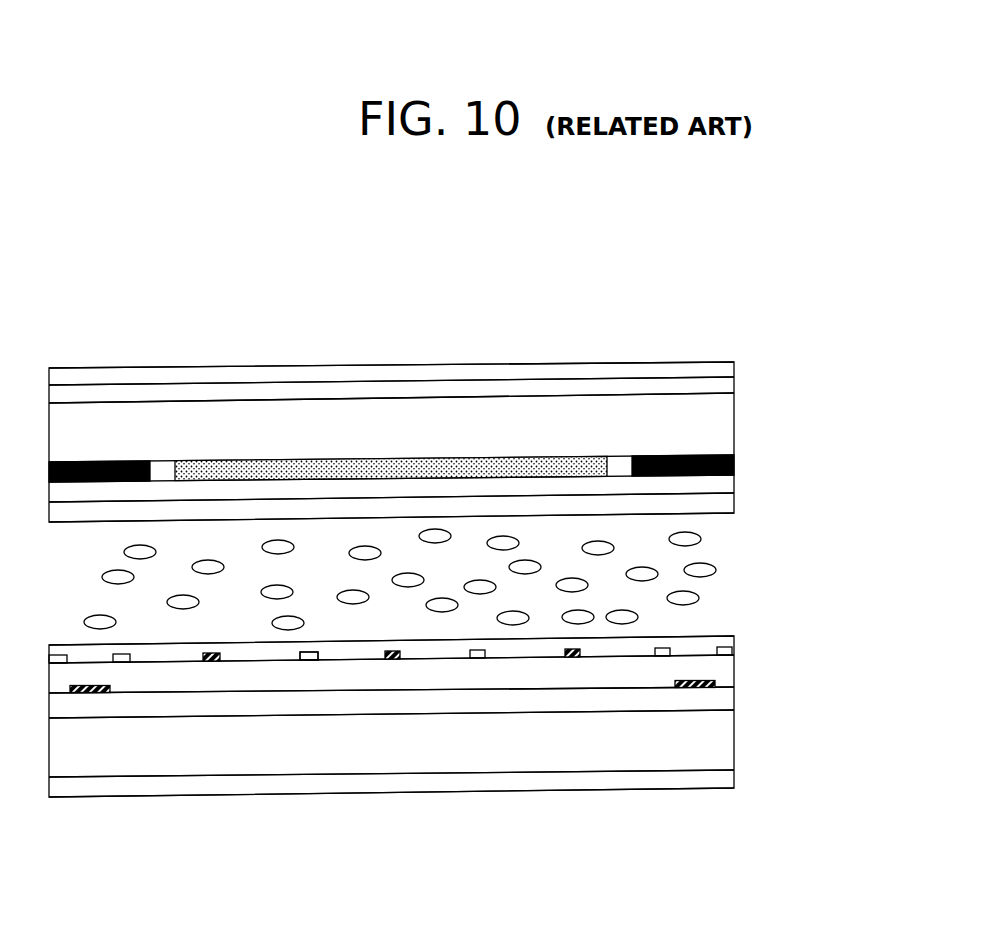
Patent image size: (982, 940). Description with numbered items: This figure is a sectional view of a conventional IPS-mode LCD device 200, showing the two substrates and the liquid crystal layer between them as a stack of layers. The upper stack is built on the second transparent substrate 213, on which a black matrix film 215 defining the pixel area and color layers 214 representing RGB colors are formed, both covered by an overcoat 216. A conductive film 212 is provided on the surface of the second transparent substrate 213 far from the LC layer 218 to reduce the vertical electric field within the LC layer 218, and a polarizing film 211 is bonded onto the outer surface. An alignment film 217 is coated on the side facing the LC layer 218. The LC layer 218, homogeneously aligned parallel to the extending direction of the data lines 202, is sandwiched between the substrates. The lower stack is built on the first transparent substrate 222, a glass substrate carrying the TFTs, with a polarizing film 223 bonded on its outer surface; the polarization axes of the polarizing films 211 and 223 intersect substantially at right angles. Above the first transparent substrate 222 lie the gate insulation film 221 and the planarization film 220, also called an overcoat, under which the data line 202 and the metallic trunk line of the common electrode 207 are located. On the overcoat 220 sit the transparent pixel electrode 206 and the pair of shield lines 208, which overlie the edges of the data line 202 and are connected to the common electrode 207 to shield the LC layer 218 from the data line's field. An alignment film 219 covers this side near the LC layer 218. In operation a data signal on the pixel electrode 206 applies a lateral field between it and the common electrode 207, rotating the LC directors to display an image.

The LCD device 200 is at (718, 305).
The data line 202 is at (90, 694).
The pixel electrode 206 is at (392, 659).
The common electrode 207 is at (310, 664).
The shield lines 208 is at (125, 664).
The polarizing film 211 is at (734, 370).
The conductive film 212 is at (734, 388).
The second transparent substrate 213 is at (734, 414).
The color layers 214 is at (607, 456).
The black matrix film 215 is at (734, 463).
The overcoat 216 is at (734, 487).
The alignment film 217 is at (734, 503).
The LC layer 218 is at (702, 541).
The alignment film 219 is at (734, 641).
The planarization film (overcoat) 220 is at (734, 670).
The gate insulation film 221 is at (734, 698).
The first transparent substrate 222 is at (734, 740).
The polarizing film 223 is at (734, 777).